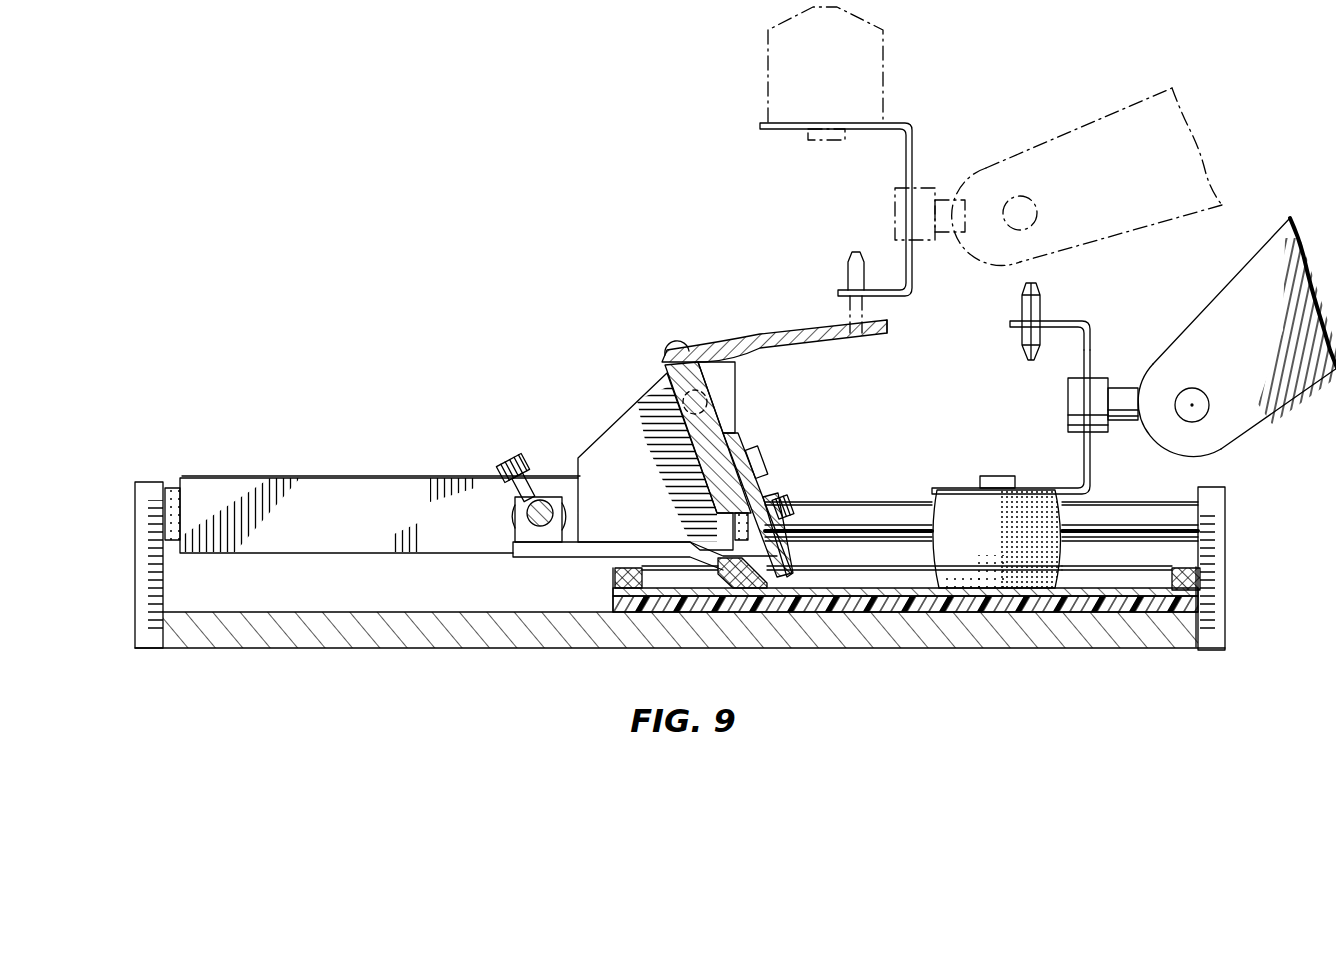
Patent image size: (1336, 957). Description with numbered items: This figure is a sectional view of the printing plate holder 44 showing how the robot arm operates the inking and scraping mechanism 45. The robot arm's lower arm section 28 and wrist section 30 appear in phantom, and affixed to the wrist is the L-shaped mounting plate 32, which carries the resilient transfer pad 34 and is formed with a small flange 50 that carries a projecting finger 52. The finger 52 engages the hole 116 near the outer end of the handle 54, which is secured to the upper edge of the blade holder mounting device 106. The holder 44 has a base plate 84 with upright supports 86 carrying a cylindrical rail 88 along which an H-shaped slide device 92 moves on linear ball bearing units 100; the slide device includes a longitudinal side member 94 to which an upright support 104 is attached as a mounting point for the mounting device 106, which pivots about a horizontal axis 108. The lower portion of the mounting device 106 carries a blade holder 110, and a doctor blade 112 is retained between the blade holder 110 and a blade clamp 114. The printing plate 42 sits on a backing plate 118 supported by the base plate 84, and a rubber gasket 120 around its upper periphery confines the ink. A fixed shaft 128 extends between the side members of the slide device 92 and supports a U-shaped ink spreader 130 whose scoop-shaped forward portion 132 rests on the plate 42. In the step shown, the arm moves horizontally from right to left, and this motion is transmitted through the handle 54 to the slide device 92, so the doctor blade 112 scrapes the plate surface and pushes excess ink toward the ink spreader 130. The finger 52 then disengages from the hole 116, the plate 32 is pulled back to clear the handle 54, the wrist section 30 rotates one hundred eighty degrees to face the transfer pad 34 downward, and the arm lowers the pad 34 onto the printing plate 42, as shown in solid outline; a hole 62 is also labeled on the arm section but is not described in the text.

The lower arm section 28 is at (1262, 396).
The wrist section 30 is at (1128, 388).
The L-shaped mounting plate 32 is at (1083, 455).
The resilient transfer pad 34 is at (770, 65).
The printing plate 42 is at (912, 590).
The printing plate holder 44 is at (393, 440).
The inking and scraping mechanism 45 is at (637, 366).
The flange 50 is at (1065, 320).
The projecting finger 52 is at (850, 268).
The handle 54 is at (778, 325).
The pivot hole 62 is at (1196, 393).
The base plate 84 is at (400, 640).
The upright supports 86 is at (140, 519).
The rail 88 is at (842, 500).
The slide device 92 is at (313, 468).
The side member 94 is at (433, 480).
The linear ball bearing units 100 is at (176, 487).
The upright support 104 is at (619, 425).
The blade holder mounting device 106 is at (700, 455).
The horizontal axis 108 is at (706, 395).
The blade holder 110 is at (736, 440).
The doctor blade 112 is at (800, 588).
The blade clamp 114 is at (792, 553).
The hole 116 is at (872, 337).
The backing plate 118 is at (1122, 600).
The rubber gasket 120 is at (613, 578).
The fixed shaft 128 is at (528, 510).
The ink spreader 130 is at (619, 540).
The scoop-shaped forward portion 132 is at (723, 540).